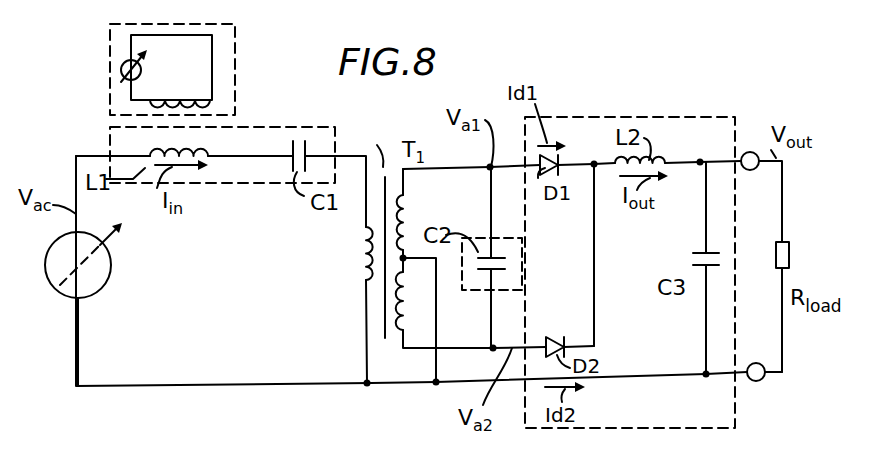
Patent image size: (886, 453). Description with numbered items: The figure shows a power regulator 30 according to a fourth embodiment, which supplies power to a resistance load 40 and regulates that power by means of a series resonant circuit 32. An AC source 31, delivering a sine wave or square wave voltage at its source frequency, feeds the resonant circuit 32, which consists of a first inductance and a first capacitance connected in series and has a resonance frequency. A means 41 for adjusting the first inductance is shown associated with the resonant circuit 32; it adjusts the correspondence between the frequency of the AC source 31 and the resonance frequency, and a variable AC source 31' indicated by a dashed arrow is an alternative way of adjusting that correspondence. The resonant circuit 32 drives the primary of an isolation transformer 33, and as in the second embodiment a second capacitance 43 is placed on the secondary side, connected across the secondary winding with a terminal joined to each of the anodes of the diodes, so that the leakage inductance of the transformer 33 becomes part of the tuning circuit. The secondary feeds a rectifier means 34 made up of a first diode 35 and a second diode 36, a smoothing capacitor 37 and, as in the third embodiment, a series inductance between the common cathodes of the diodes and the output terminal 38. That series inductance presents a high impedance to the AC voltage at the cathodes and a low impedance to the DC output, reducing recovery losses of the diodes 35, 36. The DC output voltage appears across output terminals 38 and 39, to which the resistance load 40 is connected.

The power regulator 30 is at (66, 112).
The AC source 31 is at (91, 269).
The variable AC source 31' is at (54, 345).
The series resonant circuit 32 is at (284, 128).
The isolation transformer 33 is at (455, 248).
The rectifier means 34 is at (560, 128).
The diode 35 is at (566, 160).
The diode 36 is at (552, 333).
The smoothing capacitor 37 is at (710, 250).
The output terminal 38 is at (750, 152).
The output terminal 39 is at (760, 381).
The resistance load 40 is at (792, 247).
The means for adjusting the inductance 41 is at (224, 63).
The capacitor C2 43 is at (520, 240).